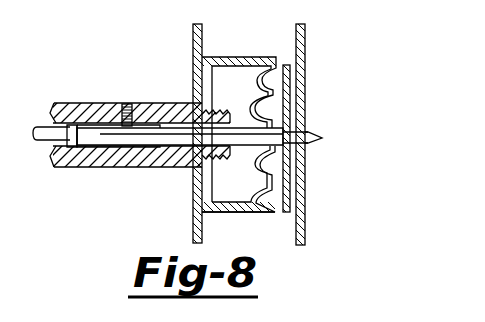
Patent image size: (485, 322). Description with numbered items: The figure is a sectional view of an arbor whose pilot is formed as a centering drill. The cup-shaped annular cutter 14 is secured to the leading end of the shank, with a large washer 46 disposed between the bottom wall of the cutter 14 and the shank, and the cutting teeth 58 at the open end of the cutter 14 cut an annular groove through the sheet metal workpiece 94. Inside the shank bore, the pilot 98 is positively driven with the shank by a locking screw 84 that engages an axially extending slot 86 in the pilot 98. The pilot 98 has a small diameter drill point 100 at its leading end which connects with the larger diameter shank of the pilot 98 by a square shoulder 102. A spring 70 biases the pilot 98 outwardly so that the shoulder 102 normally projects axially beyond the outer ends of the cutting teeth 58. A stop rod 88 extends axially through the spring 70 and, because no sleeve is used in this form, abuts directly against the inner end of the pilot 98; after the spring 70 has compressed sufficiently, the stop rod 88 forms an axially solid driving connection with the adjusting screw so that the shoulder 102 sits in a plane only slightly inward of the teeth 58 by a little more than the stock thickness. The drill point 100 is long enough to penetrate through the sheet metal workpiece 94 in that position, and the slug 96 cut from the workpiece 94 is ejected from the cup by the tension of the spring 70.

The cup-shaped annular cutter 14 is at (238, 213).
The washer 46 is at (193, 212).
The cutting teeth 58 is at (273, 62).
The spring 70 is at (80, 112).
The locking screw 84 is at (128, 104).
The axially extending slot 86 is at (156, 118).
The stop rod 88 is at (43, 110).
The sheet metal workpiece 94 is at (305, 42).
The slug 96 is at (288, 82).
The pilot 98 is at (105, 132).
The drill point 100 is at (320, 147).
The square shoulder 102 is at (285, 133).